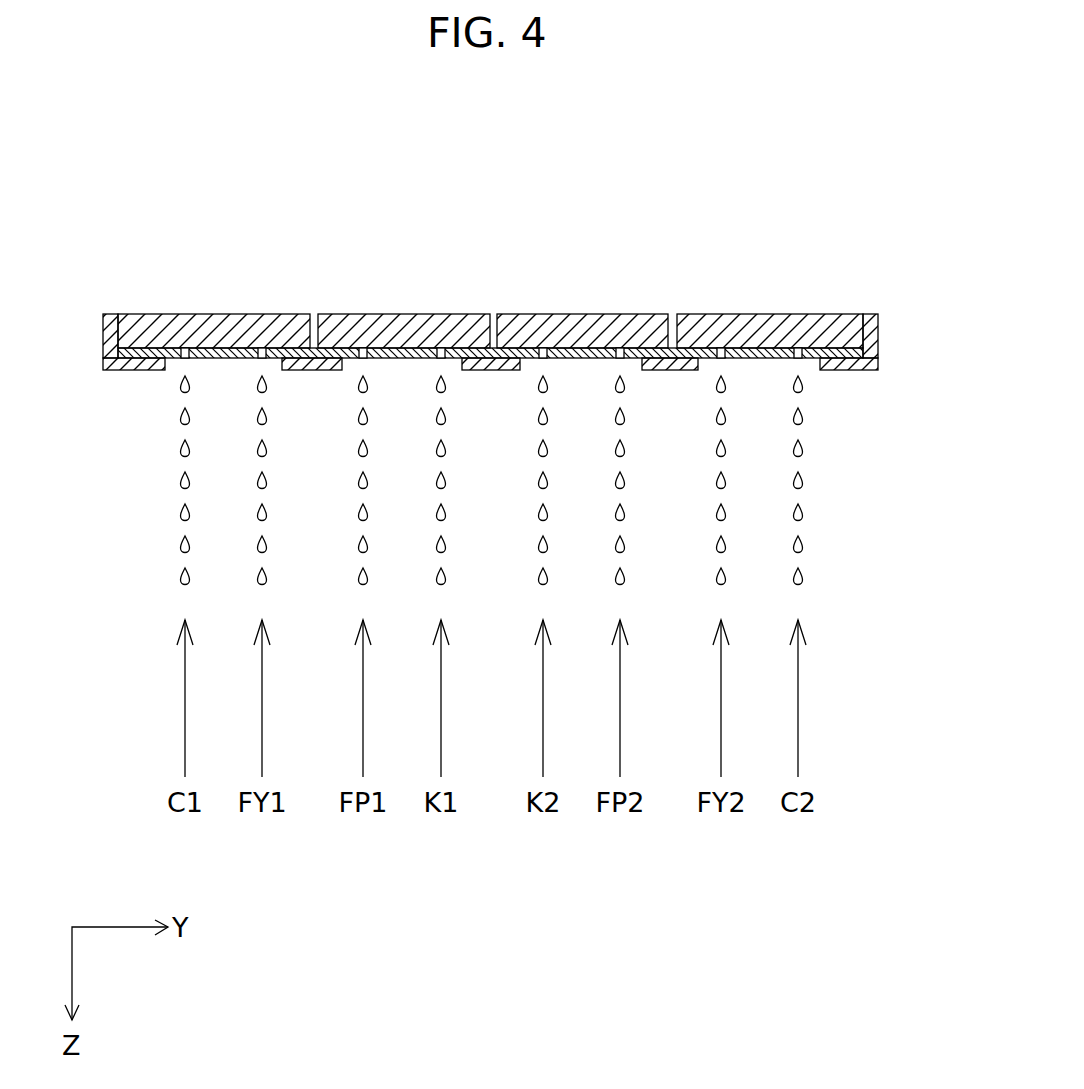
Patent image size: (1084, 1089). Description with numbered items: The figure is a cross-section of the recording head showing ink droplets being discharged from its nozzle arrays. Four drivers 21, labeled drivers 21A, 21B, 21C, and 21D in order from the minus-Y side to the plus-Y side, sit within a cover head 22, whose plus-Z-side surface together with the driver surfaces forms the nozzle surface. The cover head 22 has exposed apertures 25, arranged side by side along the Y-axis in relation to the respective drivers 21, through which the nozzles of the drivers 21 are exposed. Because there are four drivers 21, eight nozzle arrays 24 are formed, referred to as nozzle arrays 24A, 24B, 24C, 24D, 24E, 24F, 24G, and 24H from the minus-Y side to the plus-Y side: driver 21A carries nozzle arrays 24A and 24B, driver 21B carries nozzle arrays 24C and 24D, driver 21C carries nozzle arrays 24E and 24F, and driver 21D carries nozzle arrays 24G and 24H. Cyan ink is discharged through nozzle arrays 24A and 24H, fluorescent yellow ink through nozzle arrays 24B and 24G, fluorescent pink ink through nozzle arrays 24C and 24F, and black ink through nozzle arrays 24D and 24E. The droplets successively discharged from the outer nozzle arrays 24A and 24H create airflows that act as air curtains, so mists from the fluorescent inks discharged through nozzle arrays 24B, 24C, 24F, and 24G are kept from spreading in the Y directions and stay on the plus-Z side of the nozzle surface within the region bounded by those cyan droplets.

The driver 21 is at (504, 251).
The driver 21A is at (136, 318).
The driver 21B is at (345, 322).
The driver 21C is at (660, 322).
The driver 21D is at (845, 320).
The cover head 22 is at (111, 330).
The nozzle array 24 is at (488, 291).
The nozzle array 24A is at (181, 350).
The nozzle array 24B is at (261, 350).
The nozzle array 24C is at (366, 350).
The nozzle array 24D is at (443, 350).
The nozzle array 24E is at (543, 350).
The nozzle array 24F is at (620, 350).
The nozzle array 24G is at (722, 350).
The nozzle array 24H is at (799, 350).
The exposed aperture 25 is at (165, 368).